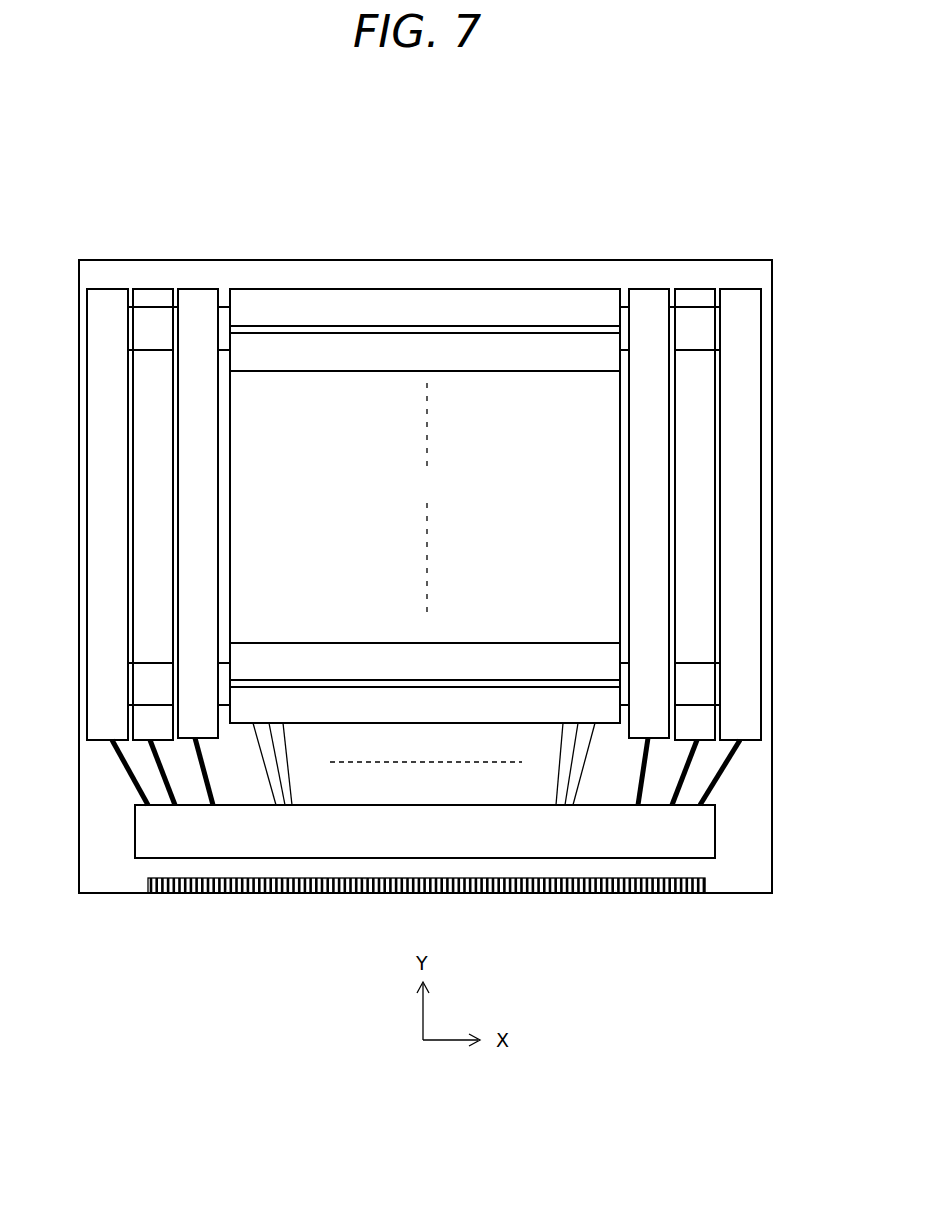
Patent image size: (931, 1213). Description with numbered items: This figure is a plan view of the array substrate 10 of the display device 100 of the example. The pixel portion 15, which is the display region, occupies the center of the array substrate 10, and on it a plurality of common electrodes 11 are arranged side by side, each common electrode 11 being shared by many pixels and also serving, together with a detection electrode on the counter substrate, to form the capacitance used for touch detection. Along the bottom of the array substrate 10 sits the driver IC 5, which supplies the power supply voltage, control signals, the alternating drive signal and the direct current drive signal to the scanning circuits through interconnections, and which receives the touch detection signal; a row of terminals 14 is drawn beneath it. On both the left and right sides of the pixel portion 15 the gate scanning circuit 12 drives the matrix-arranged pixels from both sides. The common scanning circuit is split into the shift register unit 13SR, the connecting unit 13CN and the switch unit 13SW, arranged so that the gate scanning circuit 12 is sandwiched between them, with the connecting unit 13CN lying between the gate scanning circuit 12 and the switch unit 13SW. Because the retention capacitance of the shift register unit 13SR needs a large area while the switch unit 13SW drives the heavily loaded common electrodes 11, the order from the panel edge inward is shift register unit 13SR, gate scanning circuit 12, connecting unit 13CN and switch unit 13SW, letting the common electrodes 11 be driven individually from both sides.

The display device 100 is at (448, 128).
The array substrate 10 is at (338, 259).
The common electrode 11 is at (518, 300).
The gate scanning circuit 12 is at (155, 297).
The shift register unit 13SR is at (110, 297).
The connecting unit 13CN is at (426, 477).
The switch unit 13SW is at (650, 297).
The connector terminals 14 is at (240, 893).
The driver IC 5 is at (607, 832).
The pixel portion 15 is at (444, 495).